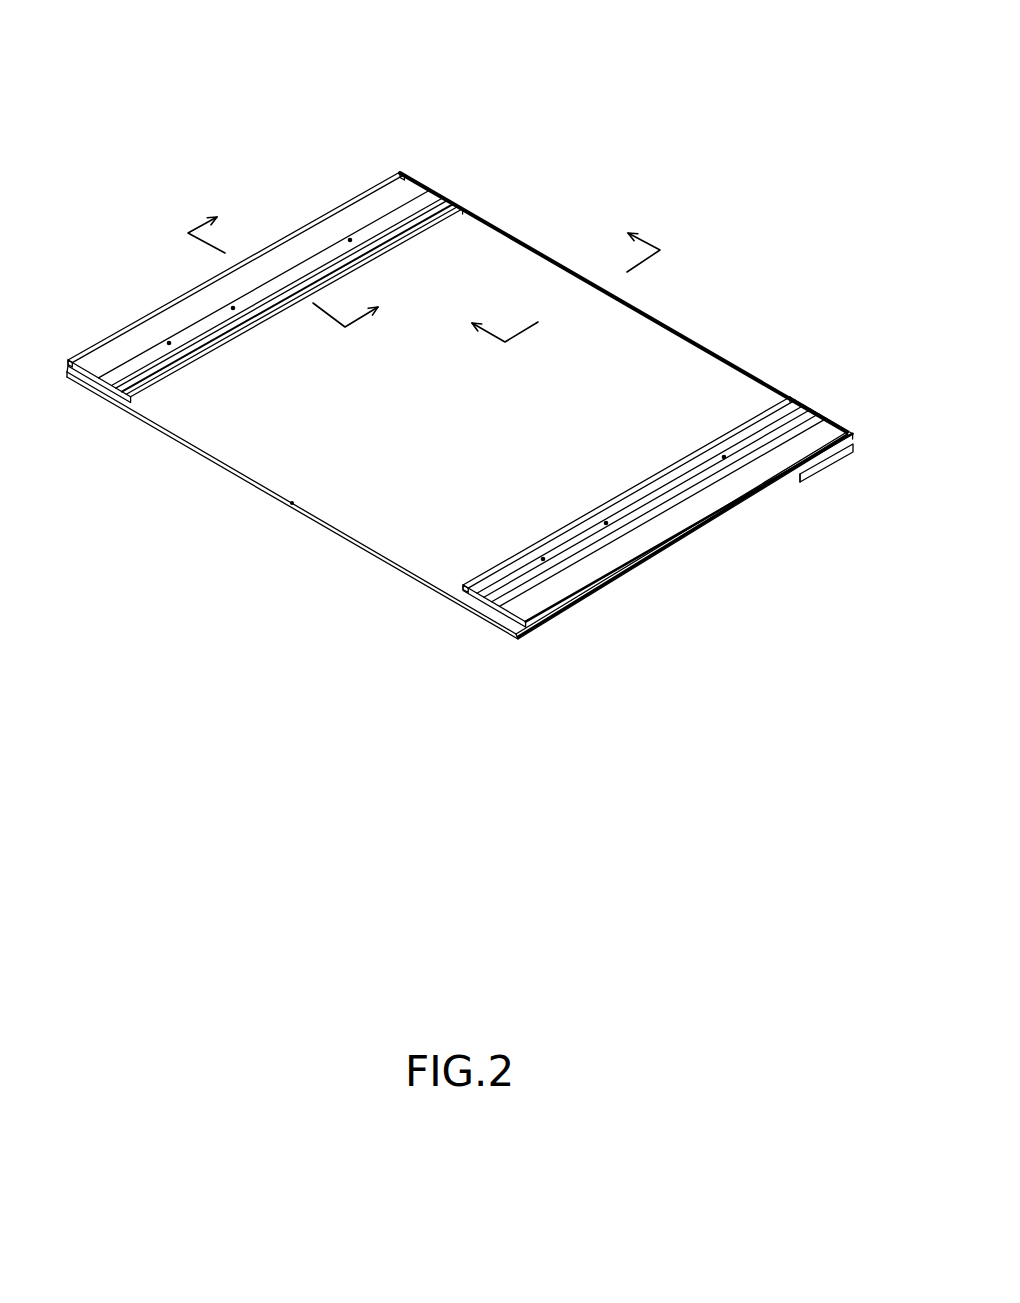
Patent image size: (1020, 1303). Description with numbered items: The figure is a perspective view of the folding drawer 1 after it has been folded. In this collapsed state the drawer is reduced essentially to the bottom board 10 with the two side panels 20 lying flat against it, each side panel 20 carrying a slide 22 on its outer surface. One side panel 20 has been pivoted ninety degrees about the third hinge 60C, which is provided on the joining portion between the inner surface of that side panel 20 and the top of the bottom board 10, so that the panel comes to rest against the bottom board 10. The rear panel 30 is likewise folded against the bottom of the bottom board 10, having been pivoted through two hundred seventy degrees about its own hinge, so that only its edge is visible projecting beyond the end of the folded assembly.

The folding drawer 1 is at (610, 107).
The bottom board 10 is at (486, 256).
The side panels 20 is at (343, 214).
The slide 22 is at (762, 433).
The rear panel 30 is at (828, 464).
The third hinge 60C is at (717, 516).